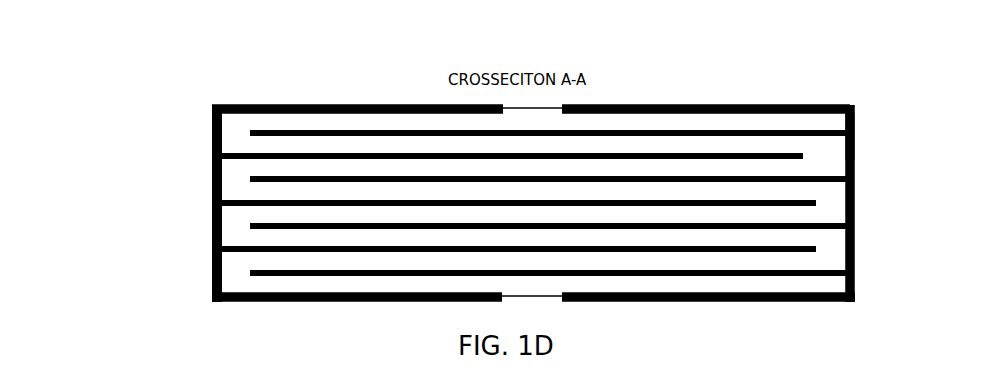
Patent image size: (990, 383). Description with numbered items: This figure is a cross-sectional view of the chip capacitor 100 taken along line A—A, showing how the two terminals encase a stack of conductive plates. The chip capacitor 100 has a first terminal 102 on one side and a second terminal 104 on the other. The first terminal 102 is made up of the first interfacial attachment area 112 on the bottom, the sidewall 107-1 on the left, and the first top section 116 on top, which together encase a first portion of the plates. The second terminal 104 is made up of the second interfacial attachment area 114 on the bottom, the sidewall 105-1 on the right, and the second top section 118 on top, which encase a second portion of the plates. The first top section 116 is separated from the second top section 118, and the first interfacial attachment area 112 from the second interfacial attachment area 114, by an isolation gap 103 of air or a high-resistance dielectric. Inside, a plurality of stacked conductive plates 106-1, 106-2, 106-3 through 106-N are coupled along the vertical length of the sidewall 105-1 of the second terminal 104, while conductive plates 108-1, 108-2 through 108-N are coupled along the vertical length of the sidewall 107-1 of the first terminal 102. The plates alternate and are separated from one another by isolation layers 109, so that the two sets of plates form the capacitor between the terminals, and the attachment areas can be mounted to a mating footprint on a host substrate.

The chip capacitor 100 is at (233, 67).
The first terminal 102 is at (205, 175).
The isolation gap 103 is at (538, 308).
The second terminal 104 is at (862, 164).
The sidewall 105-1 is at (855, 138).
The conductive plate 106-1 is at (805, 130).
The conductive plate 106-2 is at (817, 180).
The conductive plate 106-3 is at (807, 228).
The conductive plate 106-N is at (782, 275).
The sidewall 107-1 is at (213, 203).
The conductive plate 108-1 is at (238, 155).
The conductive plate 108-2 is at (237, 203).
The conductive plate 108-N is at (243, 250).
The isolation layers 109 is at (690, 190).
The first interfacial attachment area 112 is at (330, 300).
The second interfacial attachment area 114 is at (667, 300).
The first top section 116 is at (398, 107).
The second top section 118 is at (747, 102).